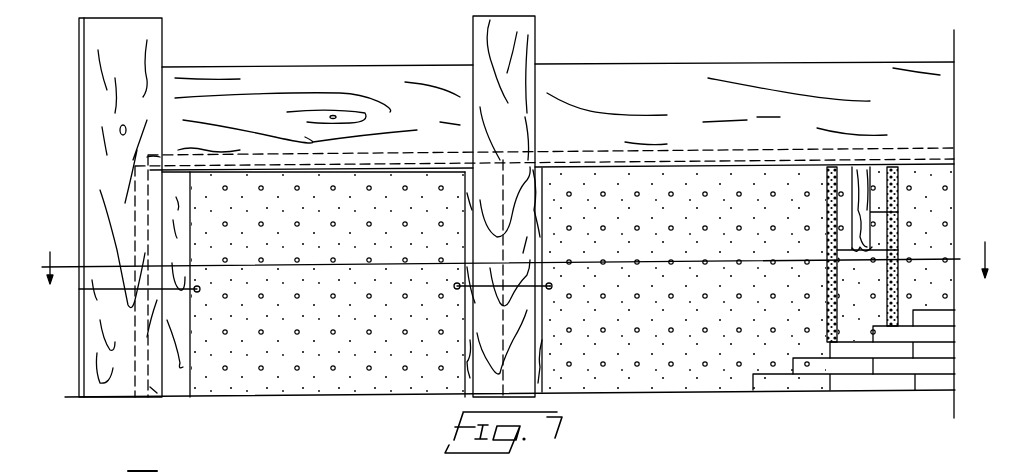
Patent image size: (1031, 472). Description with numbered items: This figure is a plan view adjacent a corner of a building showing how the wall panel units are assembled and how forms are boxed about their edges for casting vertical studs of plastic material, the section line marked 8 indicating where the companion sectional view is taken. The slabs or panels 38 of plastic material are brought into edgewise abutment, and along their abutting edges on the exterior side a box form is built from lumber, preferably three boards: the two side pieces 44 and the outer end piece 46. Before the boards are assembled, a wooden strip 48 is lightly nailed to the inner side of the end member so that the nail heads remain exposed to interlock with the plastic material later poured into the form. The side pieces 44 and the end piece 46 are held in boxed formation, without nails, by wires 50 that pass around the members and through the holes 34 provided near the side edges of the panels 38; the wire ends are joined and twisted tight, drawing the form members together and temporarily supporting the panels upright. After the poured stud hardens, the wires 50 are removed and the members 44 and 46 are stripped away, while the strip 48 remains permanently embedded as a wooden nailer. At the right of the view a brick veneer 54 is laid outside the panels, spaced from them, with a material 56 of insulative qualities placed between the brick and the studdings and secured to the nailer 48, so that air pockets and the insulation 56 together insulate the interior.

The outer end piece 46 is at (101, 206).
The side pieces 44 is at (177, 388).
The wires 50 is at (540, 262).
The slabs or panels 38 is at (325, 393).
The holes 34 is at (552, 286).
The wooden strip 48 is at (897, 210).
The insulative material 56 is at (883, 292).
The brick veneer 54 is at (870, 384).
The section line 8- 8 is at (519, 263).